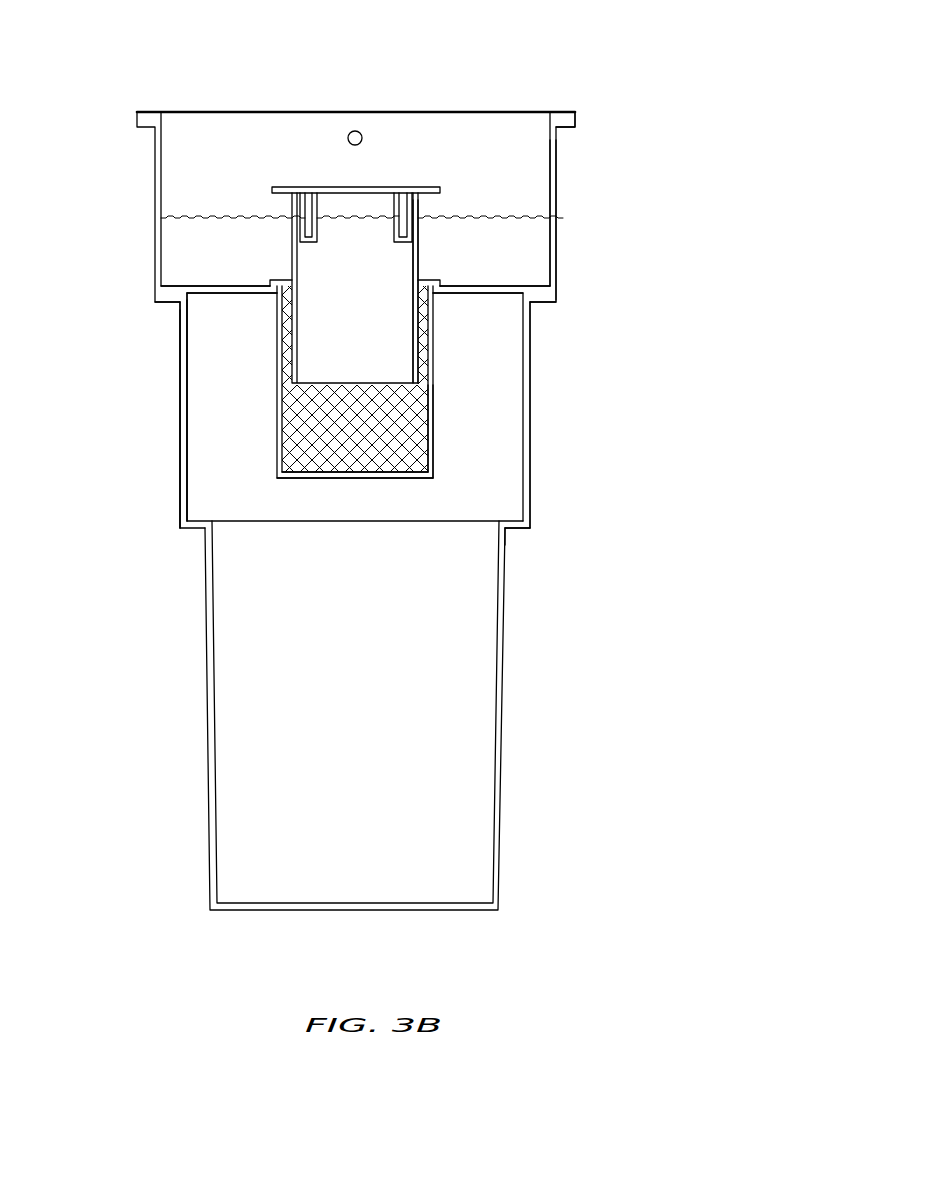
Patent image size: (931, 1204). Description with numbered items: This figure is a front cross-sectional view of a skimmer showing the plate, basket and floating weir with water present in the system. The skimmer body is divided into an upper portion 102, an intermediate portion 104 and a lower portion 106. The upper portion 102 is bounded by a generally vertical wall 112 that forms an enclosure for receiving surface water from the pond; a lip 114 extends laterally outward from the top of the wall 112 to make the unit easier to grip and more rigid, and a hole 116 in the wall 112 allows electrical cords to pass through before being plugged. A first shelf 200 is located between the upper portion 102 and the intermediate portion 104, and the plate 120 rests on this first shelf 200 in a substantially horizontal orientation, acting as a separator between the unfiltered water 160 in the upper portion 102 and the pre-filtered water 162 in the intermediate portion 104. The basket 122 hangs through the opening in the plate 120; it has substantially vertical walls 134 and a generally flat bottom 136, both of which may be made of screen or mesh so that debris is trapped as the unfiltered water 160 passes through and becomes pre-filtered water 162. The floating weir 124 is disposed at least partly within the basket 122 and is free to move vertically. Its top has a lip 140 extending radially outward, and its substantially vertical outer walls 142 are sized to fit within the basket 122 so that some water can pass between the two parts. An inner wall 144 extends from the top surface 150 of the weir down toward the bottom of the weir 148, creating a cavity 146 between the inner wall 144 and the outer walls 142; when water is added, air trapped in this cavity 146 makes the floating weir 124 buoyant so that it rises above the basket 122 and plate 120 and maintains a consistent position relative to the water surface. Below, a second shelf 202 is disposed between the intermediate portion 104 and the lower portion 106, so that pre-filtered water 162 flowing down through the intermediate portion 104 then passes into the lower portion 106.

The upper portion 102 is at (662, 177).
The intermediate portion 104 is at (663, 412).
The lower portion 106 is at (666, 706).
The wall 112 is at (558, 207).
The lip 114 is at (566, 113).
The hole 116 is at (353, 131).
The plate 120 is at (183, 300).
The basket 122 is at (278, 465).
The floating weir 124 is at (284, 375).
The walls 134 is at (428, 438).
The bottom 136 is at (417, 479).
The lip 140 is at (274, 187).
The outer walls 142 is at (413, 262).
The inner wall 144 is at (383, 205).
The cavity 146 is at (408, 200).
The bottom of the weir 148 is at (385, 390).
The top surface 150 is at (307, 187).
The unfiltered water 160 is at (185, 253).
The pre-filtered water 162 is at (213, 420).
The first shelf 200 is at (542, 303).
The second shelf 202 is at (513, 533).